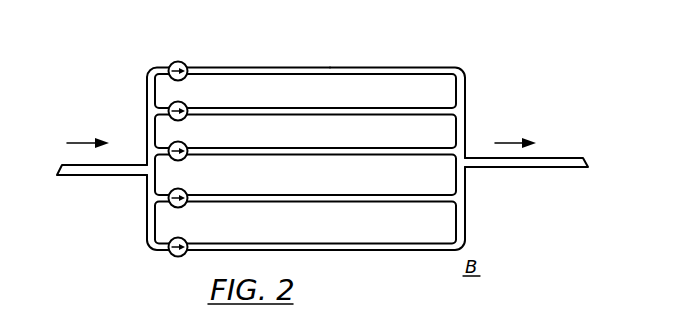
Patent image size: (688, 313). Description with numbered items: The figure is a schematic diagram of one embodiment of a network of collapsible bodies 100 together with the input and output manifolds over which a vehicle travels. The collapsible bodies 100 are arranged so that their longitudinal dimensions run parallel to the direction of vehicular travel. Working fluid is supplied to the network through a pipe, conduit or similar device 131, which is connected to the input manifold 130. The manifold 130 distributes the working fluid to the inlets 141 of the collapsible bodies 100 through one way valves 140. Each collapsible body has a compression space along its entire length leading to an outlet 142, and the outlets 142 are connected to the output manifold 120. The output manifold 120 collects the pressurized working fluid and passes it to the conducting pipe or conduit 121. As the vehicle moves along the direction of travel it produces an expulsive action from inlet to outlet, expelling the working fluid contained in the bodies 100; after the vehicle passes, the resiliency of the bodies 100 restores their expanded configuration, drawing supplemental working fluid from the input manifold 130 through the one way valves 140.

The collapsible bodies 100 is at (318, 77).
The output manifold 120 is at (464, 90).
The conducting pipe or conduit 121 is at (562, 162).
The manifold 130 is at (146, 189).
The pipe, conduit or similar device 131 is at (95, 178).
The one way valves 140 is at (172, 143).
The inlets 141 is at (222, 67).
The outlets 142 is at (436, 70).